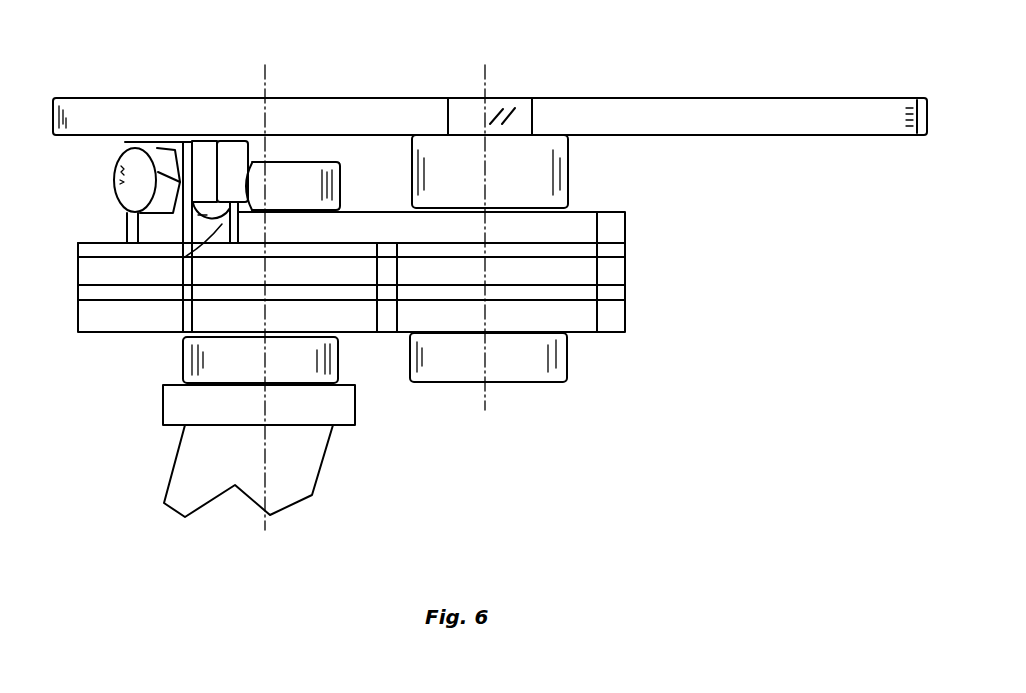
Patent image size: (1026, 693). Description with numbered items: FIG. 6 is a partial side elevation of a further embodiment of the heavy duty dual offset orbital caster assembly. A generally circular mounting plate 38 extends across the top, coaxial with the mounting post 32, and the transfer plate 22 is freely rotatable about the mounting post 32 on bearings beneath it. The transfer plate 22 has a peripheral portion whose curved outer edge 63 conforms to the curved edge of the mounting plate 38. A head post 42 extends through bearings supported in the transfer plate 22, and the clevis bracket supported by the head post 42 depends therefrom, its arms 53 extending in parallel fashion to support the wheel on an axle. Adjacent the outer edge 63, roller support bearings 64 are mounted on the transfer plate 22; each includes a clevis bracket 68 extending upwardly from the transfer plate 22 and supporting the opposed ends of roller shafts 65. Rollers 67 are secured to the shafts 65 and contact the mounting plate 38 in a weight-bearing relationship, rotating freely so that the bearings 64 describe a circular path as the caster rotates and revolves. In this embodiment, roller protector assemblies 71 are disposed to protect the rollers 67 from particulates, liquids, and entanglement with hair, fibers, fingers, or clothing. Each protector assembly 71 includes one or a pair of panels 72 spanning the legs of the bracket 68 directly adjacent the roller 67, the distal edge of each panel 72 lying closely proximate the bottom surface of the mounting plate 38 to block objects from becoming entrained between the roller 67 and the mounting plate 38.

The transfer plate 22 is at (612, 232).
The mounting post 32 is at (560, 357).
The mounting plate 38 is at (642, 98).
The head post 42 is at (177, 353).
The arms 53 is at (298, 457).
The outer edge 63 is at (127, 307).
The roller support bearings 64 is at (166, 177).
The roller shafts 65 is at (135, 163).
The rollers 67 is at (118, 197).
The clevis bracket 68 is at (167, 225).
The roller protector assemblies 71 is at (205, 160).
The panels 72 is at (207, 173).